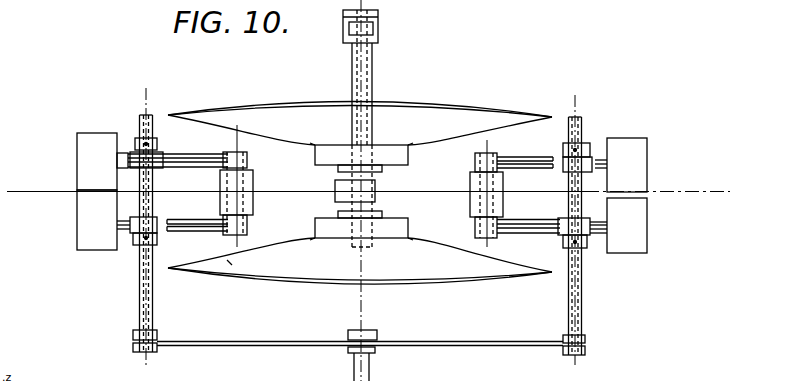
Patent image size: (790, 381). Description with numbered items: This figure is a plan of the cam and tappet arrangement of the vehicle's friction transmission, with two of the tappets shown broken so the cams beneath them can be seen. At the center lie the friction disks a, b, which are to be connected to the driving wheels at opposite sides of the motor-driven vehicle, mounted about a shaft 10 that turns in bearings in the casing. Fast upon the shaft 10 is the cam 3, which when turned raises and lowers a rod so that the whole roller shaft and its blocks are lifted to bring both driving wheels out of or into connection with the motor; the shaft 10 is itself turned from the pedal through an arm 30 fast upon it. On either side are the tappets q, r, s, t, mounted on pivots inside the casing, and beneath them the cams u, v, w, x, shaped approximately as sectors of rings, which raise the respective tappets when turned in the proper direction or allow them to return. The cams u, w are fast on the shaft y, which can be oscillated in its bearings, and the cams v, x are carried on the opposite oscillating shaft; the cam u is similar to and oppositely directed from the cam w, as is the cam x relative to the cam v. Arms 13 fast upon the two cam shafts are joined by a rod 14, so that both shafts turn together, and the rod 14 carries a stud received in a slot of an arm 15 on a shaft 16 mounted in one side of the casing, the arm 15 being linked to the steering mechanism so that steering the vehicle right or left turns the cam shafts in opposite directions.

The arm 30 is at (378, 23).
The shaft 10 is at (372, 78).
The cam 3 is at (337, 183).
The friction disk a is at (360, 123).
The friction disk b is at (360, 261).
The shaft y is at (139, 288).
The tappet q is at (97, 161).
The tappet s is at (97, 220).
The tappet t is at (627, 165).
The tappet r is at (627, 225).
The cam u is at (185, 180).
The cam w is at (153, 217).
The cam x is at (592, 152).
The cam v is at (563, 218).
The rod 14 is at (452, 343).
The arms 13 is at (167, 352).
The arm 15 is at (347, 351).
The shaft 16 is at (374, 364).